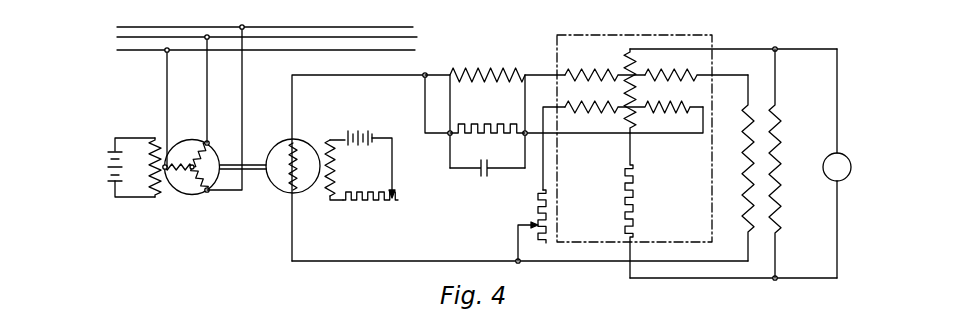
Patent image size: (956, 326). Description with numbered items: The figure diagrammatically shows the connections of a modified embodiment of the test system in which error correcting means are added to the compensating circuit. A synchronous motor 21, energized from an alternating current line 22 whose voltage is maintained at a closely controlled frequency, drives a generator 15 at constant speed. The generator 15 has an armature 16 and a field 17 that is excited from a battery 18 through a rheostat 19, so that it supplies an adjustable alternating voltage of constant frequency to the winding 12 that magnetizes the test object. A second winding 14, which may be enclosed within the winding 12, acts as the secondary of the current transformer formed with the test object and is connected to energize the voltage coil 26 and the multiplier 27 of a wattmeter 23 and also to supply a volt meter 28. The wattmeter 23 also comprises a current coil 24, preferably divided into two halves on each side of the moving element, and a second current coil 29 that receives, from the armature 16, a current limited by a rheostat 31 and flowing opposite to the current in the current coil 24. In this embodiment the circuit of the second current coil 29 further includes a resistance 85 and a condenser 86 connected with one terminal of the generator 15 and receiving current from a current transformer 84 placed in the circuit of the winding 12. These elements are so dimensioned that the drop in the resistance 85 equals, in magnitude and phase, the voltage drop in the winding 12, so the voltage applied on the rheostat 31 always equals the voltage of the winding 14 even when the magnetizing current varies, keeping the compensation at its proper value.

The alternating current line 22 is at (418, 33).
The synchronous motor 21 is at (180, 215).
The armature 16 is at (288, 146).
The generator 15 is at (324, 229).
The field 17 is at (338, 166).
The battery 18 is at (361, 128).
The rheostat 19 is at (367, 205).
The current transformer 84 is at (489, 70).
The resistance 85 is at (490, 130).
The condenser 86 is at (481, 176).
The voltage coil 26 is at (623, 63).
The current coil 24 is at (678, 70).
The second current coil 29 is at (682, 114).
The wattmeter 23 is at (713, 45).
The multiplier 27 is at (625, 190).
The rheostat 31 is at (536, 207).
The winding 12 is at (742, 168).
The second winding 14 is at (785, 176).
The volt meter 28 is at (831, 157).